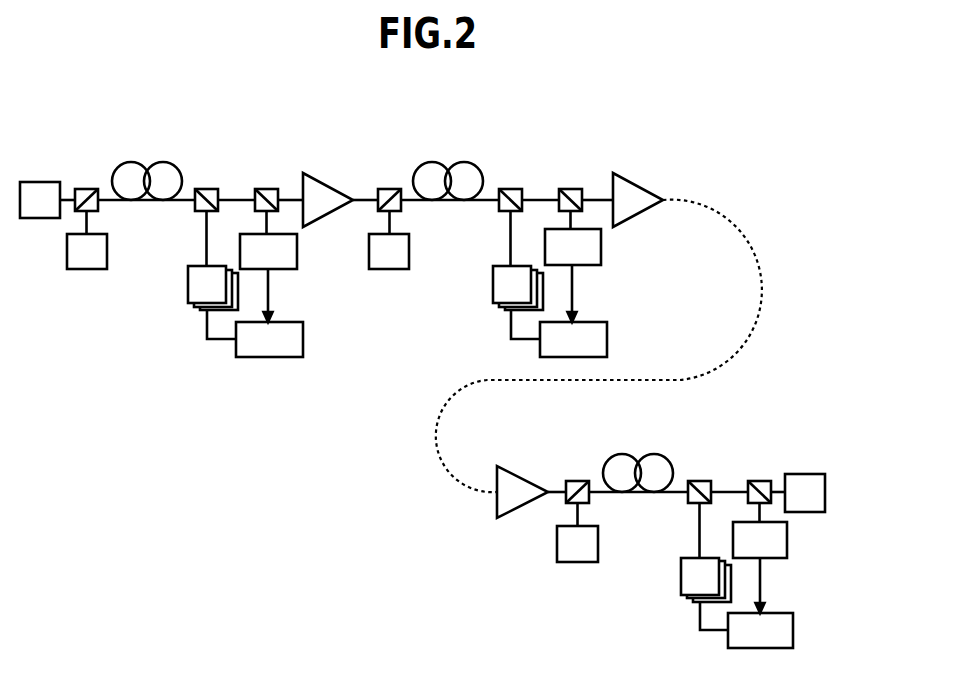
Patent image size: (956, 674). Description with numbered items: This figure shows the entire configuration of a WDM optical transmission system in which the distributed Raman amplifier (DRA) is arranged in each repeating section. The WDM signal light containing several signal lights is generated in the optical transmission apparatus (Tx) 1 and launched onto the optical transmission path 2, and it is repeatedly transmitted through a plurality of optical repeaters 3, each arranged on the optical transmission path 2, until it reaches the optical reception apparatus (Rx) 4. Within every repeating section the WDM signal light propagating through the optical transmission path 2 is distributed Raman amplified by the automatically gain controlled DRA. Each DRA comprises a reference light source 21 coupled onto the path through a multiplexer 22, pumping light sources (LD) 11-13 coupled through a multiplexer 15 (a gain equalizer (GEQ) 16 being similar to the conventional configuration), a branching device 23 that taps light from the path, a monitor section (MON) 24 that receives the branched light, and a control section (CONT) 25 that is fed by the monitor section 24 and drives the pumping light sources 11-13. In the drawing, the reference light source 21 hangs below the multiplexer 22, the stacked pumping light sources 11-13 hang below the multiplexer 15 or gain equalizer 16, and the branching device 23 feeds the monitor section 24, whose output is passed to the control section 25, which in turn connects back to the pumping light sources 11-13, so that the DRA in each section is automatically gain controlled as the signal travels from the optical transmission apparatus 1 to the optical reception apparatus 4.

The optical transmission apparatus 1 is at (40, 182).
The optical transmission path 2 is at (142, 164).
The optical repeater 3 is at (320, 178).
The optical reception apparatus 4 is at (805, 474).
The multiplexer 15 is at (205, 189).
The gain equalizer 16 is at (509, 189).
The reference light source 21 is at (84, 270).
The multiplexer 22 is at (83, 189).
The branching device 23 is at (265, 189).
The monitor section 24 is at (297, 250).
The control section 25 is at (303, 340).
The pumping light sources 11-13 is at (188, 318).